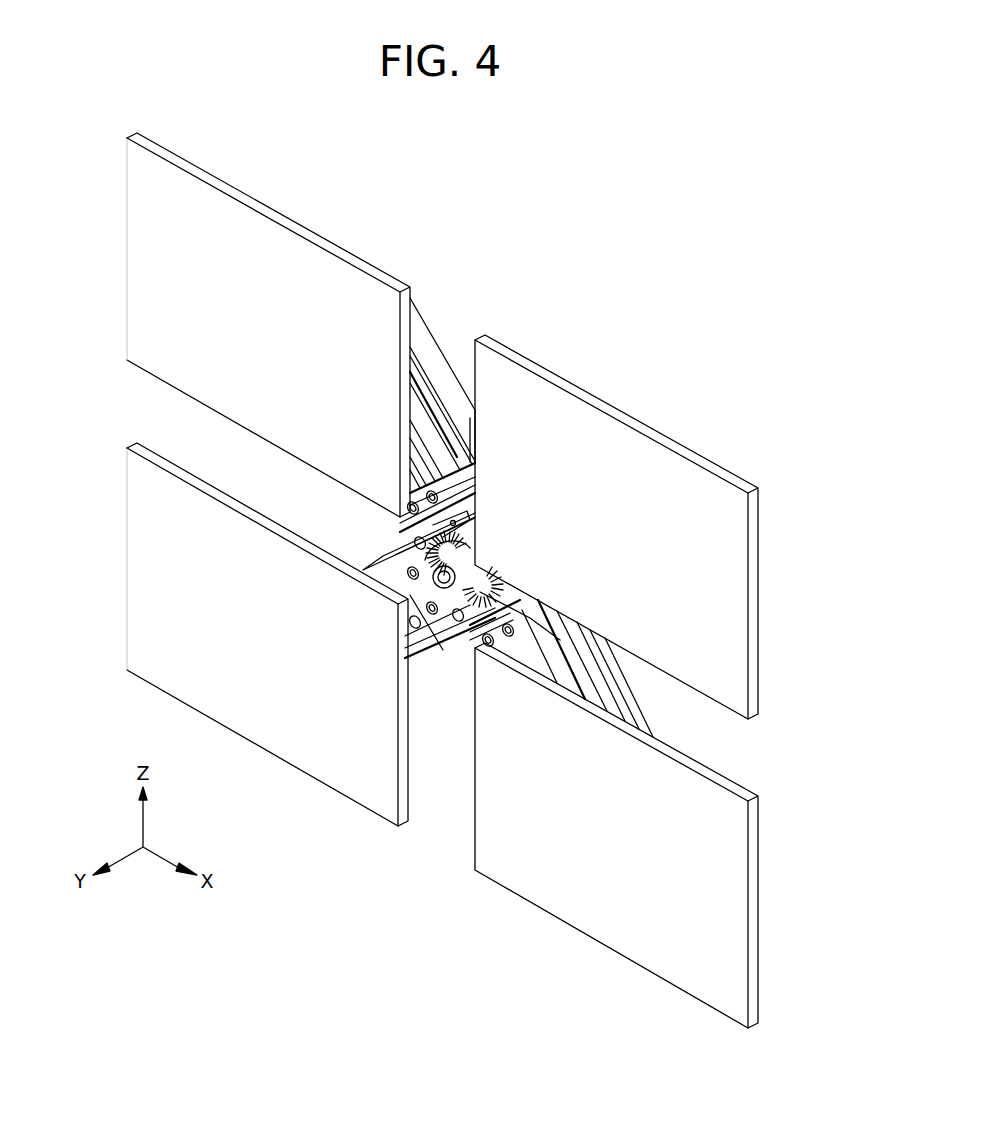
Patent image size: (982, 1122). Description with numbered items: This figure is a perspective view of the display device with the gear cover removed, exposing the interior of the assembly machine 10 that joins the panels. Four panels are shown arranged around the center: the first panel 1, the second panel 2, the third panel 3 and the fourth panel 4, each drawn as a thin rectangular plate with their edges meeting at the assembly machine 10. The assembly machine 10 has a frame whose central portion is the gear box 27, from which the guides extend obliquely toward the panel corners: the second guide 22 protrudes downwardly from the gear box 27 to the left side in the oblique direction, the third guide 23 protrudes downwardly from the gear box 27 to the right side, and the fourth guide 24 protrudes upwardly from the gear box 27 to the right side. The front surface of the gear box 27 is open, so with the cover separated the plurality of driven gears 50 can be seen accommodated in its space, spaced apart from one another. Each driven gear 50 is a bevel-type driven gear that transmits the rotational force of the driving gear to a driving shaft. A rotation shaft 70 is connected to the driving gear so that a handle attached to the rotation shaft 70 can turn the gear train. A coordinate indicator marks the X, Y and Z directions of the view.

The first panel 1 is at (705, 577).
The second panel 2 is at (705, 902).
The third panel 3 is at (155, 259).
The fourth panel 4 is at (155, 569).
The assembly machine 10 is at (441, 493).
The second guide 22 is at (623, 694).
The third guide 23 is at (432, 352).
The fourth guide 24 is at (390, 562).
The gear box 27 is at (515, 617).
The driven gear 50 is at (437, 508).
The rotation shaft 70 is at (462, 588).